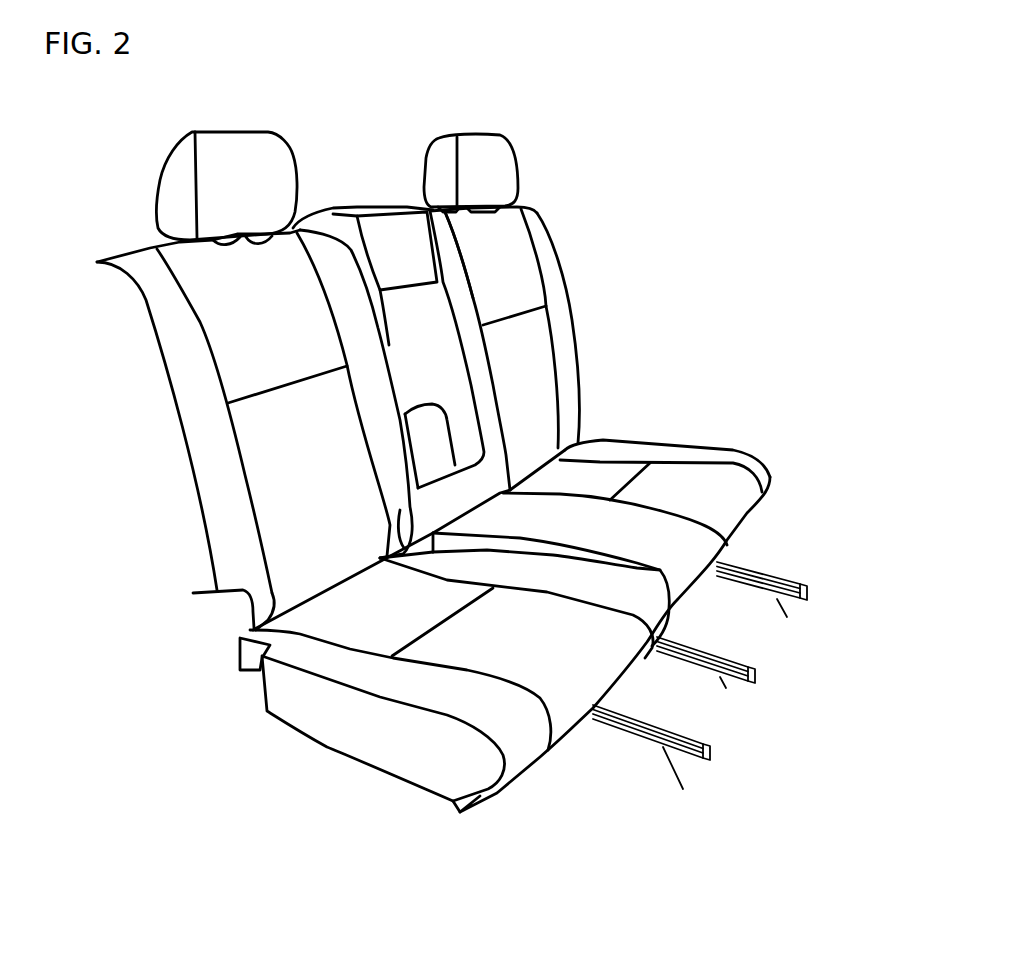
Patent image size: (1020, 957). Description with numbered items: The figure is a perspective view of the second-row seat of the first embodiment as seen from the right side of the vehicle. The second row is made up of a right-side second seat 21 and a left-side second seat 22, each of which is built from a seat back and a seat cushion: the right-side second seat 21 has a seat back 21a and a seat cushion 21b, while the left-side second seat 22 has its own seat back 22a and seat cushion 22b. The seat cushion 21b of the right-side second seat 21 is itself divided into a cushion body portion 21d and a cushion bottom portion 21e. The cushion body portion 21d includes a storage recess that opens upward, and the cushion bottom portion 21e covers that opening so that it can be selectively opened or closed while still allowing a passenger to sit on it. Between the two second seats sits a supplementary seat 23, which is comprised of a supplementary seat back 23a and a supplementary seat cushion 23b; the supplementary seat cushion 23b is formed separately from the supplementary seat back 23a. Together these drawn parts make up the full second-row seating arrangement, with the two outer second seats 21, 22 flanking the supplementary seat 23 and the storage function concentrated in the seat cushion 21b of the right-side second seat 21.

The right-side second seat 21 is at (152, 419).
The seat back 21a is at (187, 338).
The seat cushion 21b is at (250, 700).
The cushion body portion 21d is at (352, 733).
The cushion bottom portion 21e is at (566, 700).
The left-side second seat 22 is at (564, 238).
The seat back 22a is at (574, 330).
The seat cushion 22b is at (672, 473).
The supplementary seat 23 is at (353, 193).
The supplementary seat back 23a is at (412, 246).
The supplementary seat cushion 23b is at (655, 555).